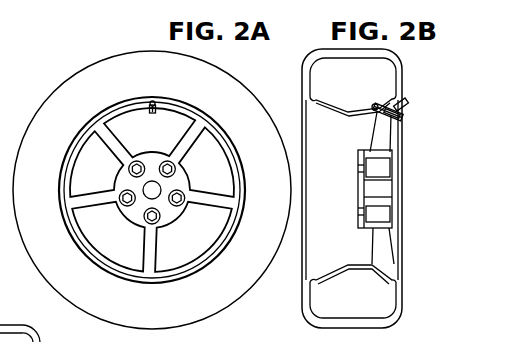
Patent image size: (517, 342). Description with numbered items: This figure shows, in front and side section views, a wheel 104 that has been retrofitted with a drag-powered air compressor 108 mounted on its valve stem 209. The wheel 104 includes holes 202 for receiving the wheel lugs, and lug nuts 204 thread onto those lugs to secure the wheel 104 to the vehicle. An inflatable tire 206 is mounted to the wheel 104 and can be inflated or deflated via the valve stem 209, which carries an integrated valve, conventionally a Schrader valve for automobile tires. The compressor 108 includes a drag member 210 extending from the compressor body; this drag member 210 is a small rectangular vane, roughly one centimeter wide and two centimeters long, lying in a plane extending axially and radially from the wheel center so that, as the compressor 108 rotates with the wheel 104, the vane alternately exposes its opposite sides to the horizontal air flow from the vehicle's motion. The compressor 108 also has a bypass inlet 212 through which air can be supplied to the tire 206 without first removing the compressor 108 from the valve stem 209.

In FIG. 2A, the wheel 104 is at (205, 268).
In FIG. 2B, the wheel 104 is at (328, 272).
In FIG. 2A, the drag-powered air compressor 108 is at (155, 103).
In FIG. 2B, the drag-powered air compressor 108 is at (400, 124).
In FIG. 2B, the holes 202 is at (360, 172).
In FIG. 2A, the lug nuts 204 is at (178, 206).
In FIG. 2A, the inflatable tire 206 is at (233, 306).
In FIG. 2B, the inflatable tire 206 is at (395, 305).
In FIG. 2B, the valve stem 209 is at (376, 110).
In FIG. 2B, the drag member 210 is at (404, 104).
In FIG. 2A, the bypass inlet 212 is at (153, 114).
In FIG. 2B, the bypass inlet 212 is at (410, 116).